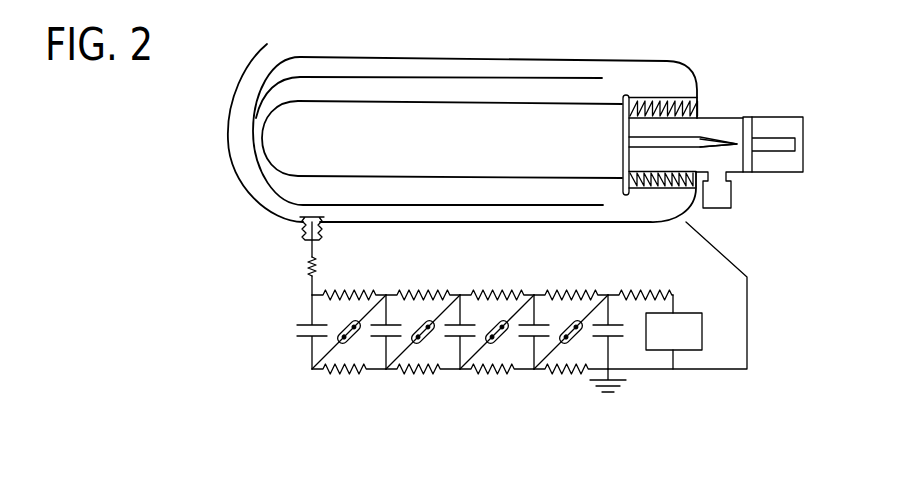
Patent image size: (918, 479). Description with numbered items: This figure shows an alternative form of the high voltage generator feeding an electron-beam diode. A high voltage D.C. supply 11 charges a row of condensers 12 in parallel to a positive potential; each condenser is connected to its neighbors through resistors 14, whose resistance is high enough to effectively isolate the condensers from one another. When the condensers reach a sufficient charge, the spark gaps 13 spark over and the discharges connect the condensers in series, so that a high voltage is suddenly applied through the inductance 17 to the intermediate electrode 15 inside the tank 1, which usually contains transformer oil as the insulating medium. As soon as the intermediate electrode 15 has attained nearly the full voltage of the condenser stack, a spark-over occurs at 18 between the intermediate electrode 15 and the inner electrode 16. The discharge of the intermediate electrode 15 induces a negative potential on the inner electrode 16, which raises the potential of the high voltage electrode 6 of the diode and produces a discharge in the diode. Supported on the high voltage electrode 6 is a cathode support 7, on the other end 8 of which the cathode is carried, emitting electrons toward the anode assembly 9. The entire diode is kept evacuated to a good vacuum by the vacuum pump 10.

The tank 1 is at (452, 58).
The high voltage electrode of the diode 6 is at (625, 96).
The cathode support 7 is at (663, 140).
The other end of cathode support 8 is at (728, 143).
The anode assembly 9 is at (748, 140).
The vacuum pump 10 is at (733, 187).
The high voltage D.C. supply 11 is at (702, 337).
The condenser 12 is at (322, 293).
The spark gap 13 is at (358, 342).
The resistor 14 is at (369, 268).
The intermediate electrode 15 is at (367, 73).
The inner electrode 16 is at (497, 105).
The inductance 17 is at (308, 270).
The spark-over location 18 is at (257, 138).